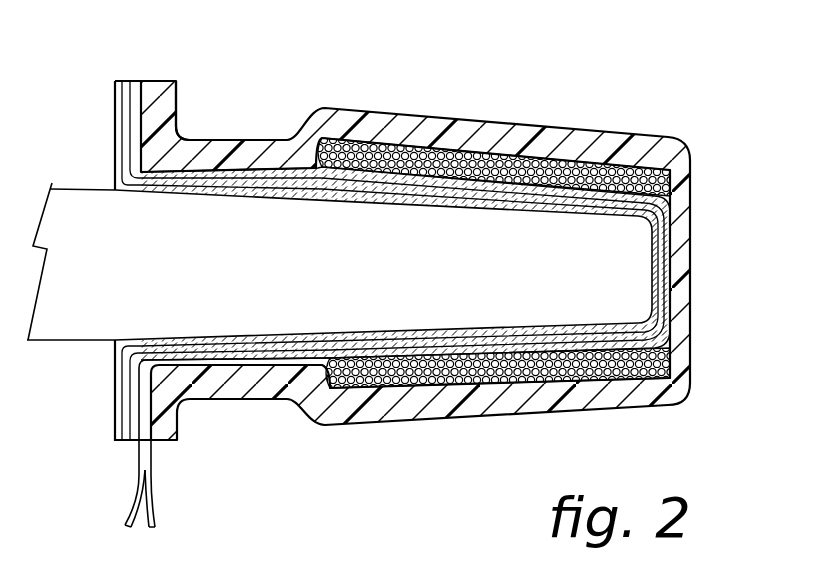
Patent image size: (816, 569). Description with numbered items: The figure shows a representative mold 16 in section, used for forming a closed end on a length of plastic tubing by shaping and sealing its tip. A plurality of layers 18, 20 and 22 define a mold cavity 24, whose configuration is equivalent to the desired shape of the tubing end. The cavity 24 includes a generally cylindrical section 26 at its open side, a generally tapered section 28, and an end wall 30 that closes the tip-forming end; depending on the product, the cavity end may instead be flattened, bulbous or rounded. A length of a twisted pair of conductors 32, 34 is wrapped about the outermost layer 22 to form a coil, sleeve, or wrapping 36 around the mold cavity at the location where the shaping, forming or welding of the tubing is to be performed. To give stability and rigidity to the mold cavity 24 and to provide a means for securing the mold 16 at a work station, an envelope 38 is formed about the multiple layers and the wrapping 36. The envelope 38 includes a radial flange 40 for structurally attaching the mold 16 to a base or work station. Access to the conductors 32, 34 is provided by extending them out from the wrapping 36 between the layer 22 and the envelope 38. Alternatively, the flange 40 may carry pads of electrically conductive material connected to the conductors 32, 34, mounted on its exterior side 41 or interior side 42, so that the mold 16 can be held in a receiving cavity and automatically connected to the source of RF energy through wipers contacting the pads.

The mold 16 is at (344, 501).
The layer 18 is at (118, 423).
The layer 20 is at (133, 380).
The outermost layer 22 is at (123, 366).
The mold cavity 24 is at (207, 197).
The generally cylindrical section 26 is at (160, 190).
The generally tapered section 28 is at (478, 205).
The end wall 30 is at (668, 224).
The conductor 32 is at (153, 510).
The conductor 34 is at (133, 503).
The wrapping 36 is at (460, 375).
The envelope 38 is at (443, 130).
The radial flange 40 is at (177, 110).
The exterior side 41 is at (125, 80).
The interior side 42 is at (182, 137).